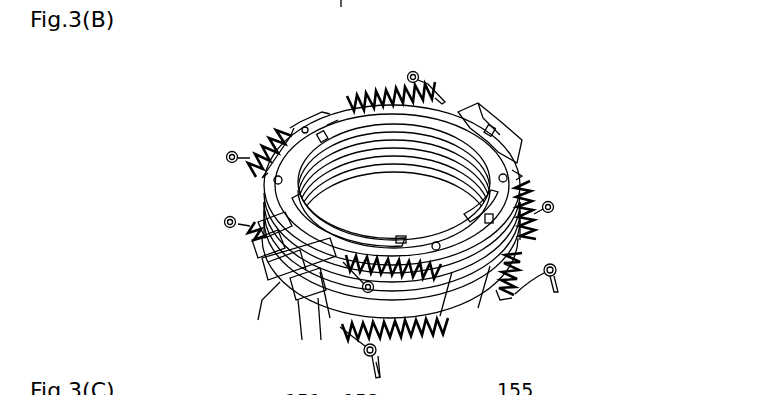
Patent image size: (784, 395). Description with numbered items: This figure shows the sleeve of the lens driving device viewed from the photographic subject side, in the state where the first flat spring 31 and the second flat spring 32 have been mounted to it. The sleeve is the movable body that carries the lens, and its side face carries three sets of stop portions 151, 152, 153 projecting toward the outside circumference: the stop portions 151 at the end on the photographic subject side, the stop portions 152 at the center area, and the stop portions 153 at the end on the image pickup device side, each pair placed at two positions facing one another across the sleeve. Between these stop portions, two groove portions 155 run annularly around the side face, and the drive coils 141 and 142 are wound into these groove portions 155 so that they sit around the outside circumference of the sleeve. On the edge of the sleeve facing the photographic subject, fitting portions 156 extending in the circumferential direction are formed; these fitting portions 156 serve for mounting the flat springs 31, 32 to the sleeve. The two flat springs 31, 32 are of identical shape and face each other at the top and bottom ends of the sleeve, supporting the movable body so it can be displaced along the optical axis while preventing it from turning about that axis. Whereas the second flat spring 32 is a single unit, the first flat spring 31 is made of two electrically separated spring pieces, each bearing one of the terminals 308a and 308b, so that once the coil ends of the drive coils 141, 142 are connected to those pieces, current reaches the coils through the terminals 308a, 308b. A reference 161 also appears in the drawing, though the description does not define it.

The first flat spring 31 is at (545, 253).
The second flat spring 32 is at (525, 172).
The drive coil 141 is at (467, 298).
The drive coil 142 is at (507, 297).
The stop portion 151 is at (480, 117).
The stop portion 152 is at (283, 287).
The stop portion 153 is at (322, 320).
The groove portion 155 is at (530, 246).
The fitting portion 156 is at (312, 122).
The connection 161 is at (340, 13).
The terminal 308a is at (566, 290).
The terminal 308b is at (386, 366).